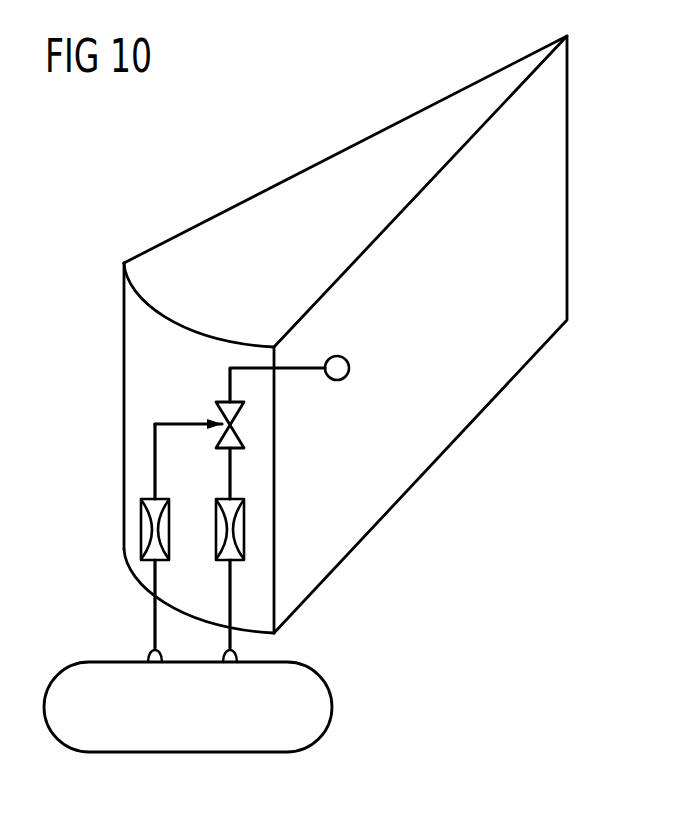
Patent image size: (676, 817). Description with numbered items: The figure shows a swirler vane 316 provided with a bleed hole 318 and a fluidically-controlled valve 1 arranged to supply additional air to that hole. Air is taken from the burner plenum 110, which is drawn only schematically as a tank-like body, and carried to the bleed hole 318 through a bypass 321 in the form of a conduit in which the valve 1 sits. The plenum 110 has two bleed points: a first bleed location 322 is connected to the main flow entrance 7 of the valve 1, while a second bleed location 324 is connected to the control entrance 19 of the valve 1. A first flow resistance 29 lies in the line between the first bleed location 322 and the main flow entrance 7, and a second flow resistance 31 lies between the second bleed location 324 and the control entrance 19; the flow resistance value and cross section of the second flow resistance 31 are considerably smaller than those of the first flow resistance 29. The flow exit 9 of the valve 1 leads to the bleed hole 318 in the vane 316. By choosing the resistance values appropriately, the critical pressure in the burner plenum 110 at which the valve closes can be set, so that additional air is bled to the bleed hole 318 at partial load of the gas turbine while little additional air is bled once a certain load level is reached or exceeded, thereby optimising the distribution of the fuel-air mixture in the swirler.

The swirler vane 316 is at (190, 243).
The bypass 321 is at (175, 383).
The flow exit 9 is at (227, 400).
The bleed hole 318 is at (349, 368).
The fluidically-controlled valve 1 is at (263, 427).
The control entrance 19 is at (218, 433).
The main flow entrance 7 is at (229, 452).
The second flow resistance 31 is at (140, 531).
The first flow resistance 29 is at (245, 530).
The second bleed location 324 is at (155, 664).
The first bleed location 322 is at (230, 664).
The burner plenum 110 is at (333, 707).